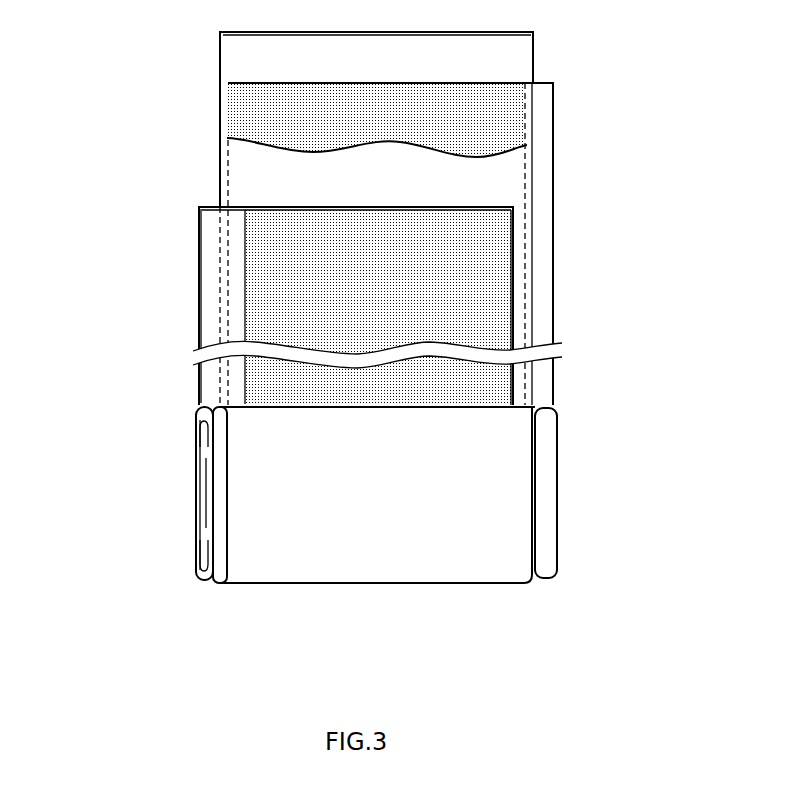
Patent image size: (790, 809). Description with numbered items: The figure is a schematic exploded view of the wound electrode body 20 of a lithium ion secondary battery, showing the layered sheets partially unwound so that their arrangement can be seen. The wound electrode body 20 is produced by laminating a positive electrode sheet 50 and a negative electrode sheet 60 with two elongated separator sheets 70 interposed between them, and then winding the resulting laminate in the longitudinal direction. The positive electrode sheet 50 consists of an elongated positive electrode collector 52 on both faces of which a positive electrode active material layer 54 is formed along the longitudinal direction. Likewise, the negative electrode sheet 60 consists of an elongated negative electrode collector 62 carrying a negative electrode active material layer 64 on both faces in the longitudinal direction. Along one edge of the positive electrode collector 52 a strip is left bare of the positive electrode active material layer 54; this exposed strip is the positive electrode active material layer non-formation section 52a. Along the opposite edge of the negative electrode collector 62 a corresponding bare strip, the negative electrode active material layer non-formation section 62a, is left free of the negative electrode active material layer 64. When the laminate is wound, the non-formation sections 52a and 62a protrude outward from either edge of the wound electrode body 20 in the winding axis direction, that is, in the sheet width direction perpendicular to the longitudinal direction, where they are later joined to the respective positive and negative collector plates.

The wound electrode body 20 is at (433, 563).
The positive electrode sheet 50 is at (198, 273).
The positive electrode collector 52 is at (197, 335).
The positive electrode active material layer non-formation section 52a is at (215, 305).
The positive electrode active material layer 54 is at (255, 222).
The negative electrode sheet 60 is at (555, 157).
The negative electrode collector 62 is at (557, 250).
The negative electrode active material layer non-formation section 62a is at (542, 222).
The negative electrode active material layer 64 is at (520, 108).
The separator sheet 70 is at (240, 50).